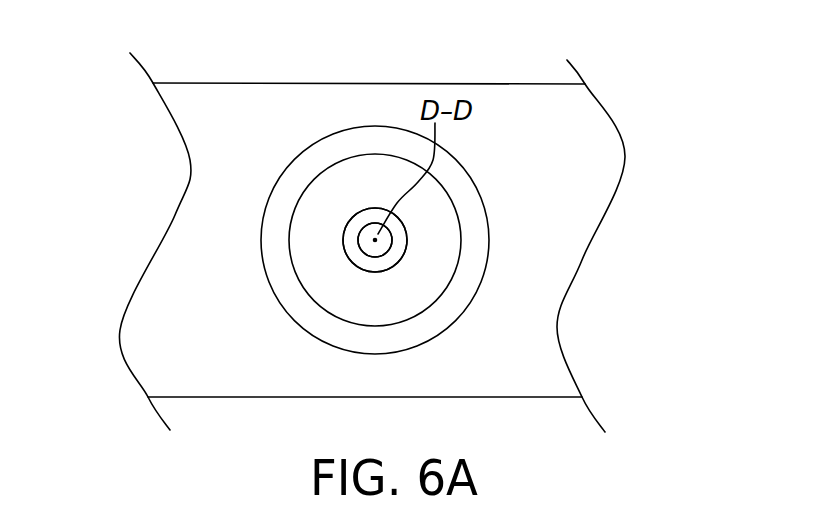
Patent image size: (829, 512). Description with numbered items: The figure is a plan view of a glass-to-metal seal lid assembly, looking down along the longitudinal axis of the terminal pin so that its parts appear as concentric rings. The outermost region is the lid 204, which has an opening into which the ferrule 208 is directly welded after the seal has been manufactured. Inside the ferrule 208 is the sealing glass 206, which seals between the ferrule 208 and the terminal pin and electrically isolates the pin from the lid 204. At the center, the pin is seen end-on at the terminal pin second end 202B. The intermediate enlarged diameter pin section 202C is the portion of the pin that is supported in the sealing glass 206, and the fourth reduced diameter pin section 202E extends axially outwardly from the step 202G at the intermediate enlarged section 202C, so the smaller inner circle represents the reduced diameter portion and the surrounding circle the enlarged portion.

The lid 204 is at (237, 100).
The ferrule 208 is at (465, 195).
The sealing glass 206 is at (432, 260).
The terminal pin second end 202B is at (363, 227).
The fourth reduced diameter pin section 202E is at (377, 217).
The intermediate enlarged diameter pin section 202C is at (363, 270).
The step 202G is at (377, 265).